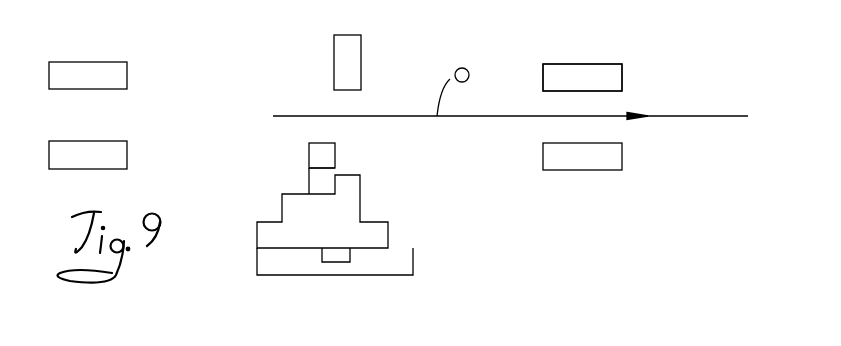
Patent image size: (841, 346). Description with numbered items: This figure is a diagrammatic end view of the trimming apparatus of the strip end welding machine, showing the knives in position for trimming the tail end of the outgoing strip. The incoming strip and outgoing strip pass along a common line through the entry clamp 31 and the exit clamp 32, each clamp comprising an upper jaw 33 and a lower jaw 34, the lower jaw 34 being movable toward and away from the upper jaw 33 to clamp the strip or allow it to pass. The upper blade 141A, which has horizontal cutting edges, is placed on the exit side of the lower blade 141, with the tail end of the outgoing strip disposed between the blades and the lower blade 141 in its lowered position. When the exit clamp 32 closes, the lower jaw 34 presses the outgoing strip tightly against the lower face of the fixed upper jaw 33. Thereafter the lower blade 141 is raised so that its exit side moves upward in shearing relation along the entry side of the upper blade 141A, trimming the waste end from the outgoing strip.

The entry clamp 31 is at (128, 55).
The exit clamp 32 is at (627, 63).
The upper jaw 33 is at (591, 72).
The lower jaw 34 is at (582, 157).
The lower blade 141 is at (325, 157).
The upper blade 141A is at (352, 65).